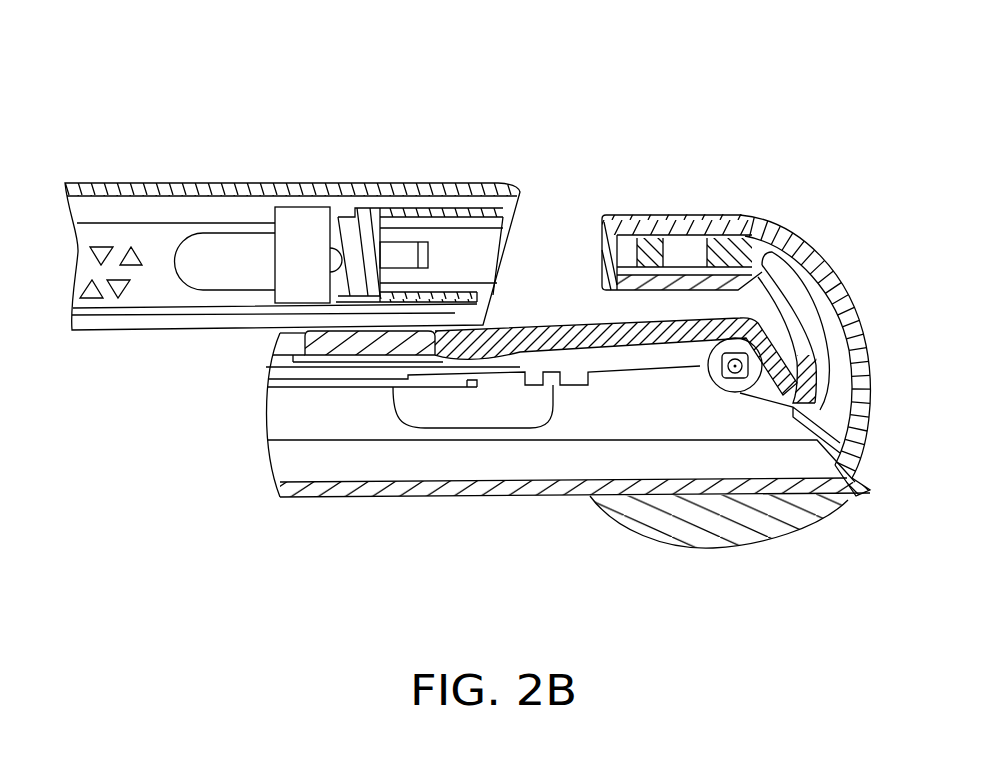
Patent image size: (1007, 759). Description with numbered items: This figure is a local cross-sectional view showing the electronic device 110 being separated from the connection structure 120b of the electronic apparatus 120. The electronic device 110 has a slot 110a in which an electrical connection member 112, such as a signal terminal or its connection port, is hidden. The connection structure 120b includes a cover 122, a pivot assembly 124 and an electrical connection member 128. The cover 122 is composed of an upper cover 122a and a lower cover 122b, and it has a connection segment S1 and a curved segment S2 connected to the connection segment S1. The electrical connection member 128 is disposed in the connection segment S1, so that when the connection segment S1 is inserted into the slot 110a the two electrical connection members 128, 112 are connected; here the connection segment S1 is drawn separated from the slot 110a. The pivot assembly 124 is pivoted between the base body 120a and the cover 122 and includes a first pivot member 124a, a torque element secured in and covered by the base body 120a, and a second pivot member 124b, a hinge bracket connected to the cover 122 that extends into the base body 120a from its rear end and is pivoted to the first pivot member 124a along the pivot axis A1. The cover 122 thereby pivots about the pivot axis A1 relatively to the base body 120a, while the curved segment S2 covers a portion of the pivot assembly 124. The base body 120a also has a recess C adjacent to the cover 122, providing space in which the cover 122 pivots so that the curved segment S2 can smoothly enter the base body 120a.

The electronic device 110 is at (158, 287).
The slot 110a is at (437, 212).
The electrical connection member 112 is at (400, 253).
The second body 120 is at (938, 595).
The base body 120a is at (818, 527).
The connection structure 120b is at (886, 377).
The cover 122 is at (835, 97).
The upper cover 122a is at (800, 267).
The lower cover 122b is at (687, 285).
The pivot assembly 124 is at (735, 618).
The first pivot member 124a is at (600, 358).
The second pivot member 124b is at (770, 403).
The electrical connection member 128 is at (647, 237).
The pivot axis A1 is at (737, 358).
The recess C is at (758, 523).
The connection segment S1 is at (688, 194).
The curved segment S2 is at (849, 251).